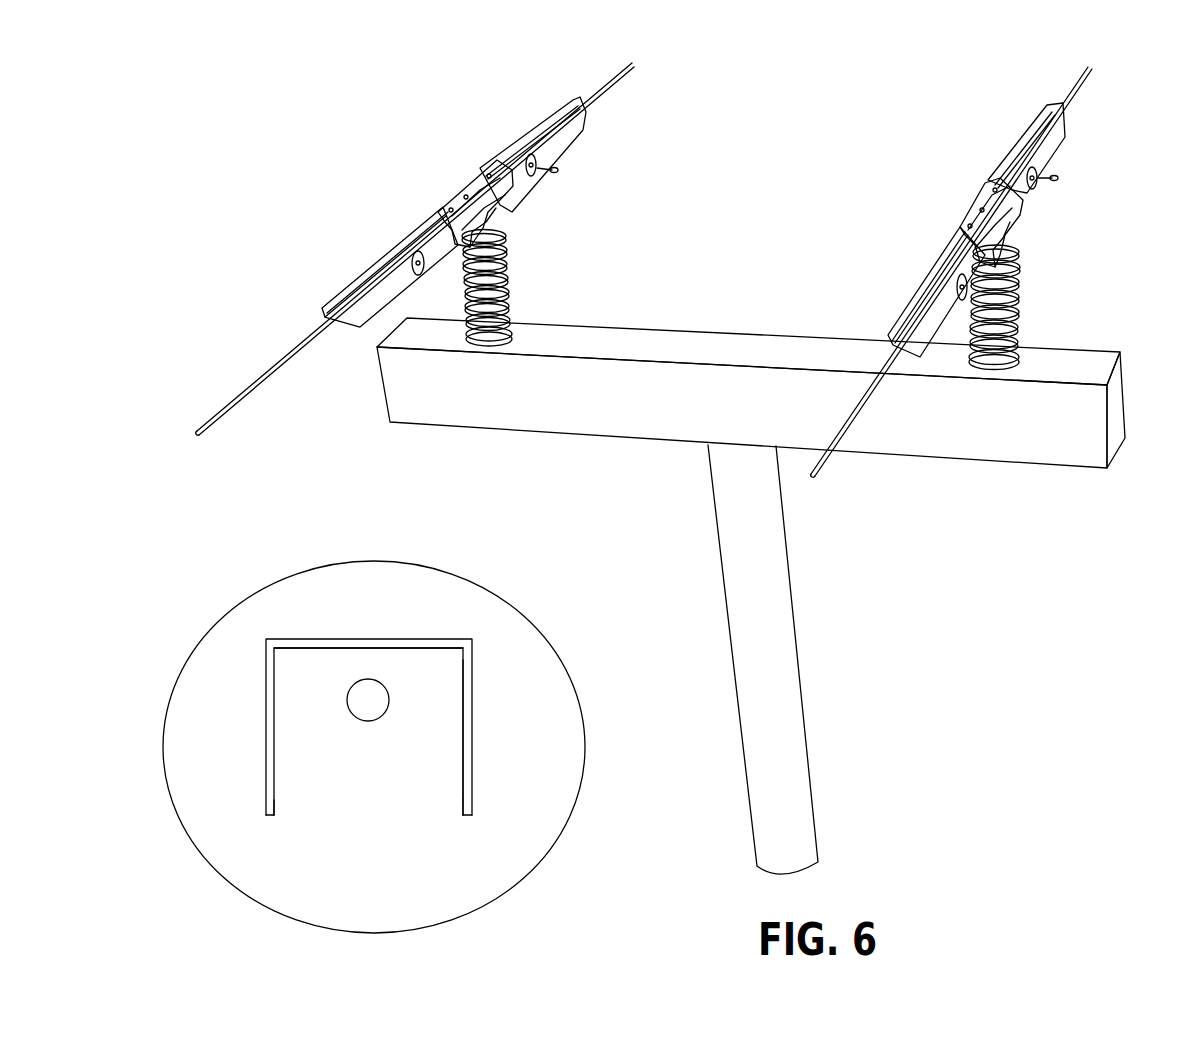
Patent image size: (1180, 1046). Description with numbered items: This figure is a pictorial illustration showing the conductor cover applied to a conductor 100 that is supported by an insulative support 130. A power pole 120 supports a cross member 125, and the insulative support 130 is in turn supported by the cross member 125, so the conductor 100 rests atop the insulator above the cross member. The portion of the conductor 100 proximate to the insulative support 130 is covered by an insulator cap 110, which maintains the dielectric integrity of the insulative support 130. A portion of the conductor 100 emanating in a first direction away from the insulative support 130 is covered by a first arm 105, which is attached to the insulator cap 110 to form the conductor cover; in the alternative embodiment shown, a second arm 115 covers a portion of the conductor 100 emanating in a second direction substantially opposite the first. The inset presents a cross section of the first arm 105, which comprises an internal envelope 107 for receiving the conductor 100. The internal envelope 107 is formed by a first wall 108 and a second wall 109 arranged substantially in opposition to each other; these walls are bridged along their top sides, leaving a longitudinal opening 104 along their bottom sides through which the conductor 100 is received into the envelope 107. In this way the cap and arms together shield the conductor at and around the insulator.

The conductor 100 is at (238, 398).
The longitudinal opening 104 is at (362, 805).
The first arm 105 is at (351, 284).
The internal envelope 107 is at (434, 750).
The first wall 108 is at (467, 817).
The second wall 109 is at (275, 817).
The insulator cap 110 is at (453, 189).
The second arm 115 is at (534, 133).
The power pole 120 is at (792, 583).
The cross member 125 is at (638, 328).
The insulative support 130 is at (504, 265).